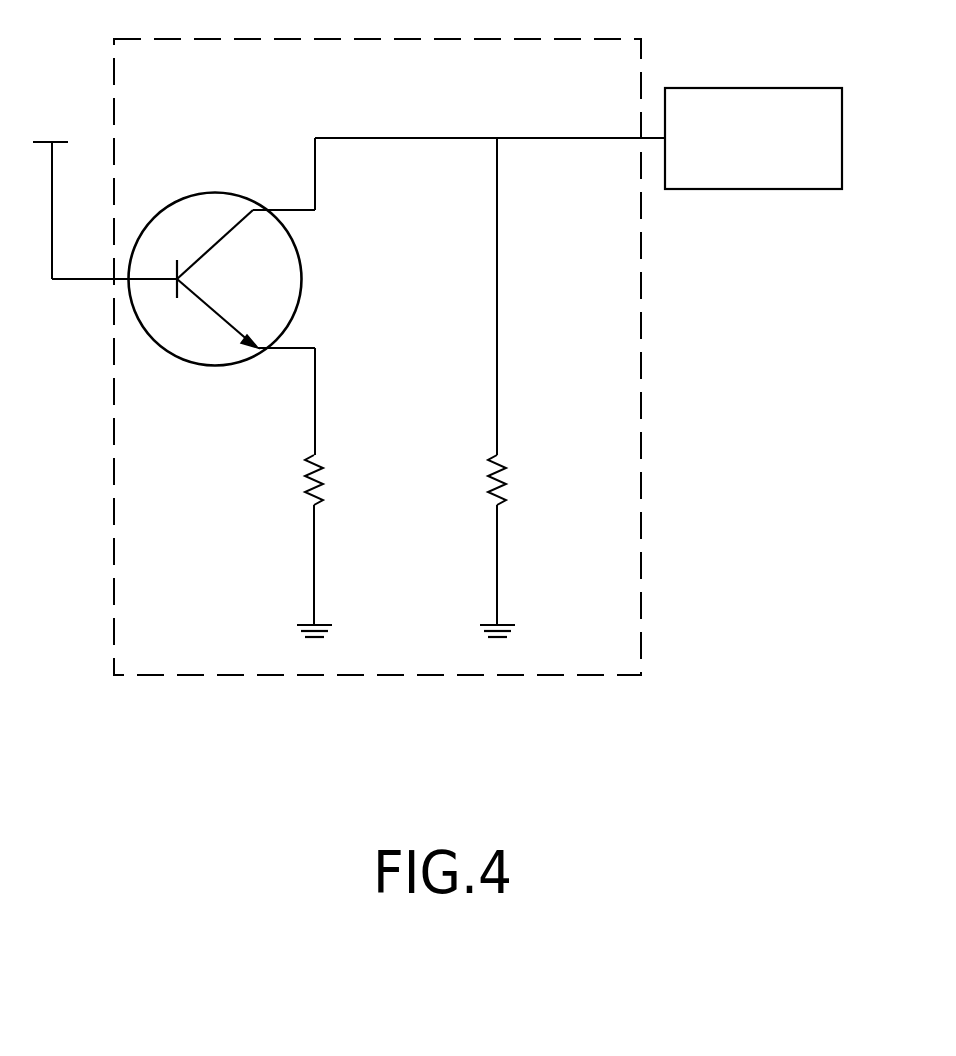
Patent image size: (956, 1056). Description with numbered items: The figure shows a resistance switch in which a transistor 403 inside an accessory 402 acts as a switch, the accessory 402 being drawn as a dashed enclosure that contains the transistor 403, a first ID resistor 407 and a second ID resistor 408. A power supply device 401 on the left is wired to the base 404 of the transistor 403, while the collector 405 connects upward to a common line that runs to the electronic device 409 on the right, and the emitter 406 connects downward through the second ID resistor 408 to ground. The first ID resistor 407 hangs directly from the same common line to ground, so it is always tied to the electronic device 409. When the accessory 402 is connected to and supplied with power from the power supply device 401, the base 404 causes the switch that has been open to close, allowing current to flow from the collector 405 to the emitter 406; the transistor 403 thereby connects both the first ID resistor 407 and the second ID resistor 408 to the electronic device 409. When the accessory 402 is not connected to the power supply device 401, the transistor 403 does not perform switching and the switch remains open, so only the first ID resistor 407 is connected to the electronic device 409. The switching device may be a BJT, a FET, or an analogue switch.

The power supply device 401 is at (40, 133).
The accessory 402 is at (516, 39).
The transistor 403 is at (222, 193).
The base 404 is at (172, 292).
The collector 405 is at (246, 208).
The emitter 406 is at (246, 367).
The first ID resistor 407 is at (496, 454).
The second ID resistor 408 is at (313, 454).
The electronic device 409 is at (800, 88).